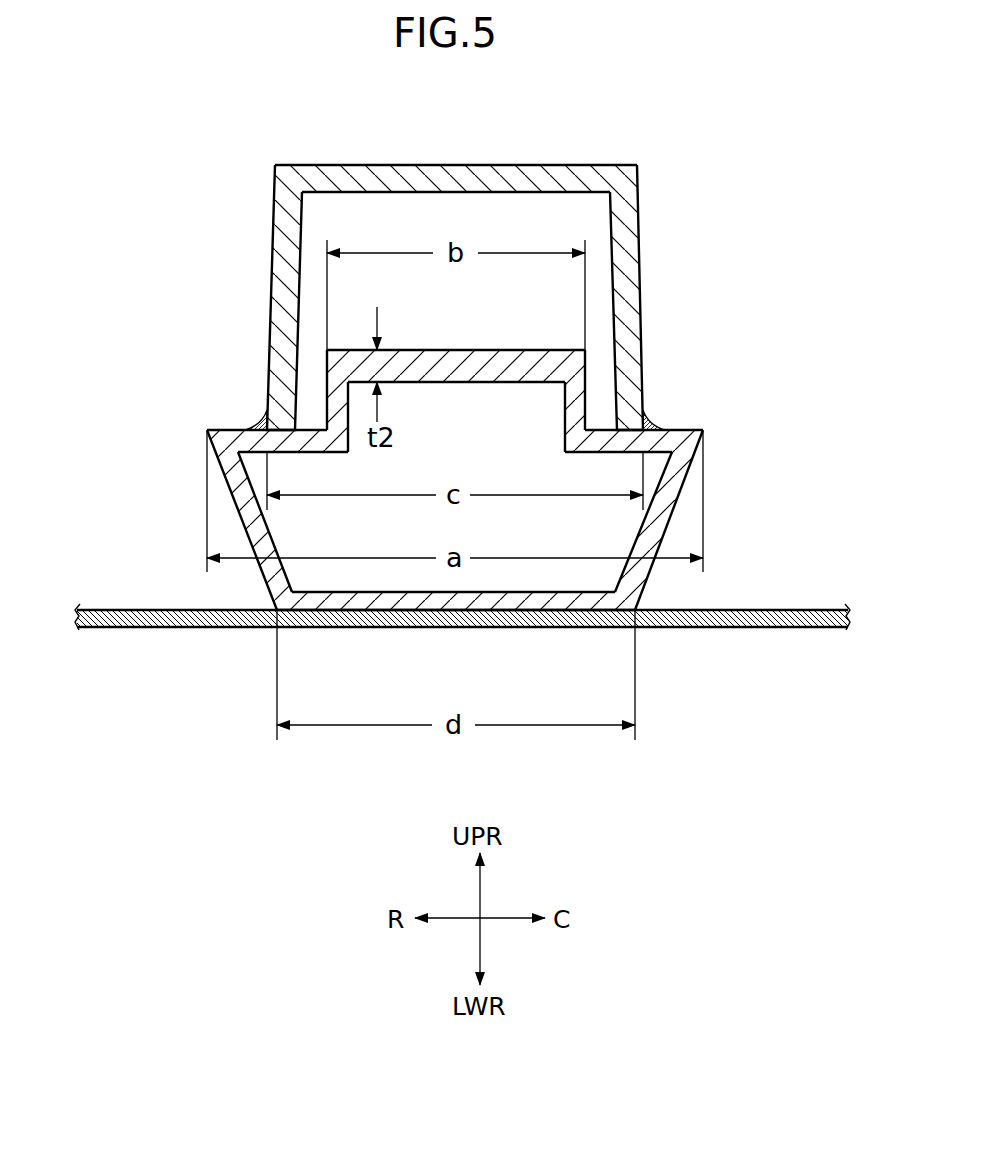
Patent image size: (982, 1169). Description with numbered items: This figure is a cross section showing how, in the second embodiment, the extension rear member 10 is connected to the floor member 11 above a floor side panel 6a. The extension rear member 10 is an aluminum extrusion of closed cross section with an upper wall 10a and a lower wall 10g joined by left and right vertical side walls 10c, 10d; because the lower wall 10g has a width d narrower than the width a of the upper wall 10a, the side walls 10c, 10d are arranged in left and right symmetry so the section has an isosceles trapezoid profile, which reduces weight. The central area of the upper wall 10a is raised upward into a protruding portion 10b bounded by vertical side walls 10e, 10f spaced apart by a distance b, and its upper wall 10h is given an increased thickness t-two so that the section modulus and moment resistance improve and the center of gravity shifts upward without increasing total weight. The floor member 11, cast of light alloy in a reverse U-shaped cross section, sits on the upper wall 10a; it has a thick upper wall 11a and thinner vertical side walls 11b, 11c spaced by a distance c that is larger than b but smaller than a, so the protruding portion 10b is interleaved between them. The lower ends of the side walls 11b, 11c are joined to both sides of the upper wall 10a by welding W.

The extension rear member 10 is at (187, 487).
The upper wall 10a is at (323, 418).
The protruding portion 10b is at (540, 344).
The vertical side wall 10c is at (247, 533).
The vertical side wall 10d is at (672, 527).
The vertical side wall of protruding portion 10e is at (330, 373).
The vertical side wall of protruding portion 10f is at (587, 388).
The lower wall 10g is at (565, 628).
The upper wall of protruding portion 10h is at (482, 350).
The floor member 11 is at (223, 224).
The upper wall 11a is at (512, 165).
The vertical side wall 11b is at (278, 273).
The vertical side wall 11c is at (627, 238).
The welding W is at (262, 414).
The floor side panel 6a is at (790, 610).